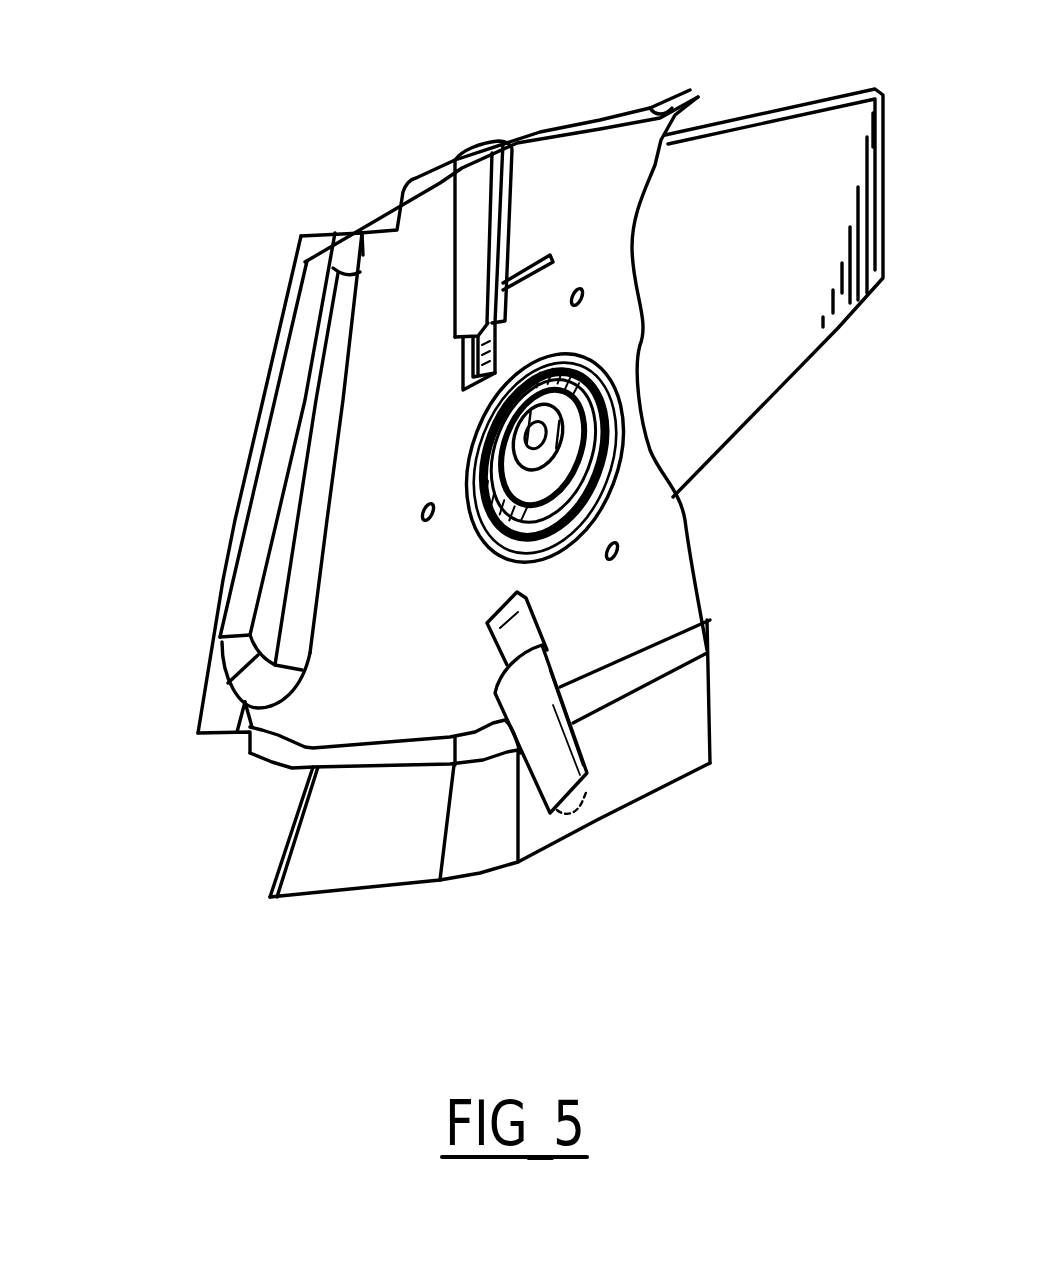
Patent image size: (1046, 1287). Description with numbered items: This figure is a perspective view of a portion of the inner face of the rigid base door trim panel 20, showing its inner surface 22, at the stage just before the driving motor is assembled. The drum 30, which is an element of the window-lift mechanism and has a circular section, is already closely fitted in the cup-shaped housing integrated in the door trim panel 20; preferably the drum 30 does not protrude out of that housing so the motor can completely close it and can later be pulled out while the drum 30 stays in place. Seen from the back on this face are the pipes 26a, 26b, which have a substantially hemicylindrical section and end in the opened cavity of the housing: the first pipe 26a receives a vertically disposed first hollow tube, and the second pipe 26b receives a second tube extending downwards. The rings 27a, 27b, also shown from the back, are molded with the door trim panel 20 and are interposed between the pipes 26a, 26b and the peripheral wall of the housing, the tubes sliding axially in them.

The door trim panel 20 is at (190, 608).
The inner surface 22 is at (791, 150).
The first pipe 26a is at (487, 172).
The second pipe 26b is at (585, 792).
The first ring 27a is at (465, 360).
The second ring 27b is at (508, 636).
The drum 30 is at (600, 487).